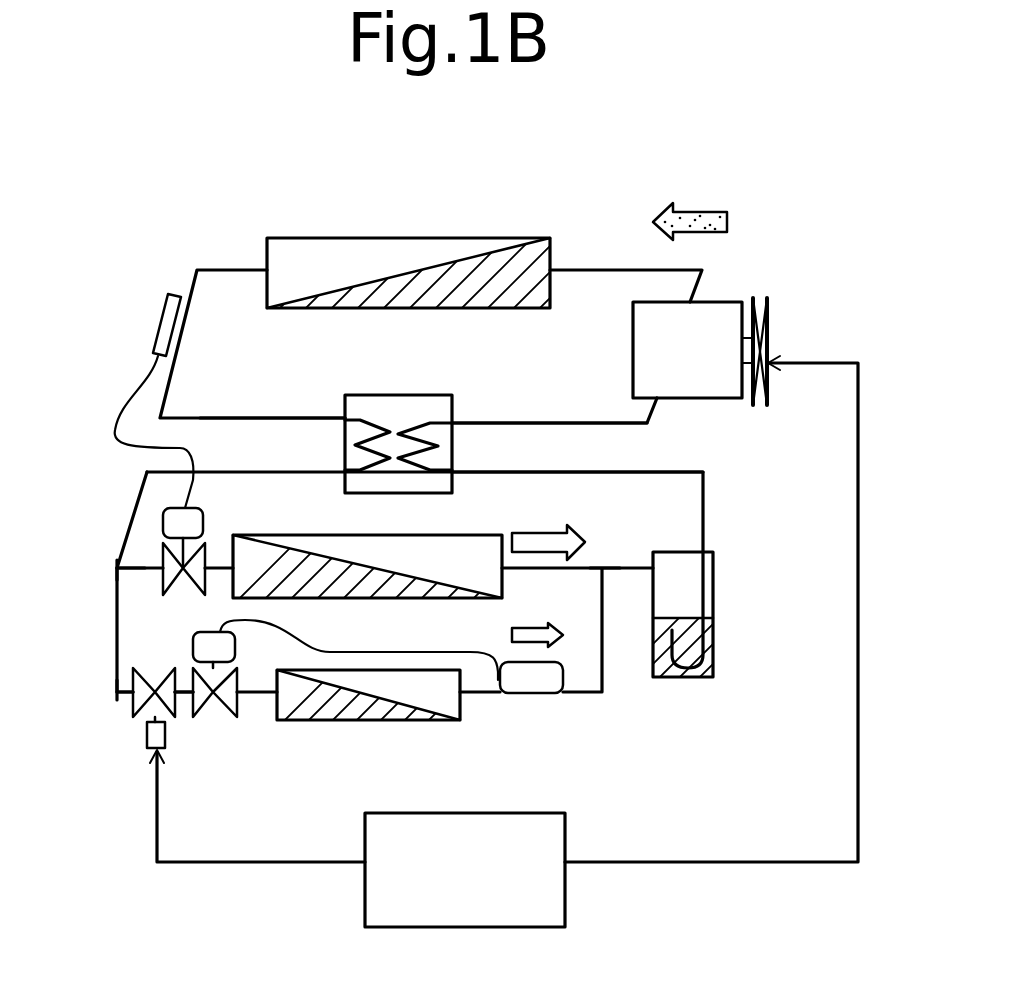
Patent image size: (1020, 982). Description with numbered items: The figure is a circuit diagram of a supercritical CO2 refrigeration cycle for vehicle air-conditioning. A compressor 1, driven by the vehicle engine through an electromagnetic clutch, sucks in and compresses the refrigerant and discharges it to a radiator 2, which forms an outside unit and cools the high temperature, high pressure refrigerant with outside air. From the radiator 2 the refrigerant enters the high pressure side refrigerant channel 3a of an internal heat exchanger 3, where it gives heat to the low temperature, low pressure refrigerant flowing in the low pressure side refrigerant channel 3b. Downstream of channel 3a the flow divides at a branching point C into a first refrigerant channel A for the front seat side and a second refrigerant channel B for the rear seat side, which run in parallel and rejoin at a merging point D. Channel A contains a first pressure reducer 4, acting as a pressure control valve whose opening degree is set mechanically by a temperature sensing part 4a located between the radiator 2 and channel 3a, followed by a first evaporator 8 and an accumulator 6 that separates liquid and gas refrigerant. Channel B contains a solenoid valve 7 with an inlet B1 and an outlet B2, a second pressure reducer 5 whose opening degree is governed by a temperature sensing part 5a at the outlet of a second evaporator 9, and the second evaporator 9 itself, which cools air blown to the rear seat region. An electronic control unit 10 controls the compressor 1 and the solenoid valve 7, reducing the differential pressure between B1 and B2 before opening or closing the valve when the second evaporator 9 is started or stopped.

The compressor 1 is at (707, 318).
The radiator 2 is at (408, 248).
The internal heat exchanger 3 is at (345, 455).
The high pressure side refrigerant channel 3a is at (267, 418).
The low pressure side refrigerant channel 3b is at (503, 423).
The first pressure reducer 4 is at (163, 558).
The temperature sensing part 4a is at (155, 325).
The second pressure reducer 5 is at (193, 645).
The temperature sensing part 5a is at (540, 687).
The accumulator 6 is at (717, 653).
The solenoid valve 7 is at (147, 687).
The first evaporator 8 is at (488, 535).
The second evaporator 9 is at (463, 707).
The electronic control unit 10 is at (545, 902).
The first refrigerant channel A is at (130, 567).
The second refrigerant channel B is at (128, 695).
The inlet of the solenoid valve B1 is at (128, 680).
The outlet of the solenoid valve B2 is at (183, 697).
The branching point C is at (115, 566).
The merging point D is at (605, 567).